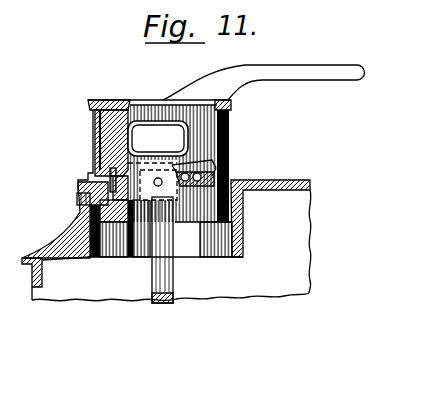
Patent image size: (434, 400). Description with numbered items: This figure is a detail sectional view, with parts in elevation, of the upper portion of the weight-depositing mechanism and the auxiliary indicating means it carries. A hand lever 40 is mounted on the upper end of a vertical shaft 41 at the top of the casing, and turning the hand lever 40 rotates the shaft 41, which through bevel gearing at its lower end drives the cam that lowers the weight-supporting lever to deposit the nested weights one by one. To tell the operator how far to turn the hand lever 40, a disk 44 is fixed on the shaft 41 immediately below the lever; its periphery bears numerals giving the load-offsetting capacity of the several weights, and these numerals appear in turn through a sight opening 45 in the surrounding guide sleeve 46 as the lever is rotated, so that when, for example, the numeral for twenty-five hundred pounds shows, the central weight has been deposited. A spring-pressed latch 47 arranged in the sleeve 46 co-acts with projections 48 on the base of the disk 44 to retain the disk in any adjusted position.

The hand lever 40 is at (309, 75).
The vertical shaft 41 is at (150, 300).
The disk 44 is at (110, 133).
The sight opening 45 is at (187, 139).
The guide sleeve 46 is at (172, 167).
The spring-pressed latch 47 is at (95, 180).
The projections 48 is at (242, 193).